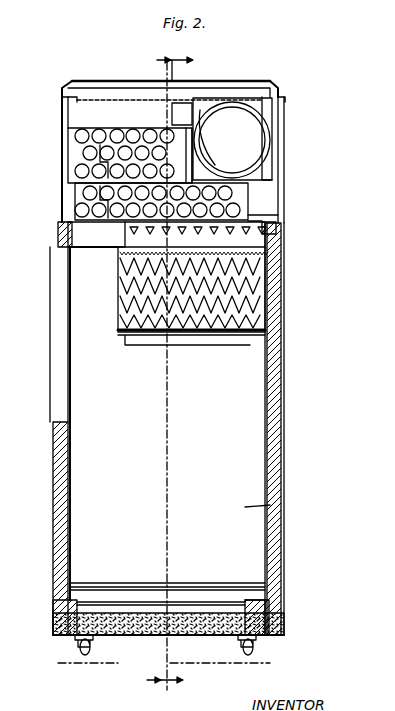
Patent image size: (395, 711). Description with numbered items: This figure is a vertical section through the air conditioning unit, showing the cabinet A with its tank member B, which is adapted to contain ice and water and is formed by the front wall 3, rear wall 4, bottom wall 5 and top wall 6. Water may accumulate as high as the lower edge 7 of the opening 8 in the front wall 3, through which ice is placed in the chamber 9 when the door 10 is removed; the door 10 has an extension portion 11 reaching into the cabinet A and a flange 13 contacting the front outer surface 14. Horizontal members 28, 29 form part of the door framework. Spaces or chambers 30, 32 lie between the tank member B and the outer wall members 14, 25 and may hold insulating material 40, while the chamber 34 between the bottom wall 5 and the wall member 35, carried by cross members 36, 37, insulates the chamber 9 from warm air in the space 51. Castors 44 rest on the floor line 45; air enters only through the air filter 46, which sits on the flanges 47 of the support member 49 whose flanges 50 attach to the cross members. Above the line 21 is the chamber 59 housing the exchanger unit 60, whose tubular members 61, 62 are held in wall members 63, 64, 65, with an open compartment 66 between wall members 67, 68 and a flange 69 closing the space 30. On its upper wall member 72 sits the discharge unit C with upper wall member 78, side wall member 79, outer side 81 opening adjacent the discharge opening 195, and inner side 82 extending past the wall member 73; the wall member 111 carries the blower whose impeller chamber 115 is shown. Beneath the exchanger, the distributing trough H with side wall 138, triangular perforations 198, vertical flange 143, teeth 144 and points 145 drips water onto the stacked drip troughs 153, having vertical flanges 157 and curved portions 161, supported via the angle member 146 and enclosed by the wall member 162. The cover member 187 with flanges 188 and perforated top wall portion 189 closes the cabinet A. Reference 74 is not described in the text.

The top wall portion 189 is at (214, 80).
The cover member 187 is at (277, 86).
The flanges 188 is at (285, 95).
The discharge opening 195 is at (62, 97).
The discharge unit C is at (77, 102).
The vertical side wall member 79 is at (77, 117).
The side panel 74 is at (62, 108).
The outer side 81 is at (85, 96).
The distributing trough H is at (270, 118).
The wall member 73 is at (195, 126).
The impeller chamber 115 is at (272, 136).
The wall member 111 is at (222, 165).
The inner side 82 is at (112, 120).
The wall member 64 is at (102, 128).
The exchanger unit 60 is at (108, 128).
The upper wall member 78 is at (128, 128).
The upper wall member 72 is at (160, 128).
The tubular members 61 is at (82, 166).
The wall member 67 is at (76, 176).
The wall member 63 is at (80, 182).
The wall member 65 is at (88, 194).
The compartment 66 is at (90, 210).
The line 21 is at (78, 206).
The tubular members 62 is at (265, 196).
The chamber 59 is at (250, 214).
The wall member 68 is at (262, 222).
The flange 69 is at (276, 228).
The side wall 138 is at (130, 242).
The triangular perforations 198 is at (176, 236).
The points 145 is at (138, 258).
The triangular serrations or teeth 144 is at (262, 250).
The cabinet A is at (270, 292).
The vertical flange 143 is at (272, 262).
The vertical flanges 157 is at (252, 276).
The drip troughs 153 is at (255, 302).
The curved portions 161 is at (135, 270).
The wall member 162 is at (118, 326).
The angle member 146 is at (186, 340).
The top wall 6 is at (100, 248).
The front wall 3 is at (30, 508).
The flange 13 is at (58, 228).
The horizontal member 28 is at (62, 248).
The door 10 is at (50, 357).
The opening 8 is at (70, 390).
The extension portion 11 is at (64, 430).
The lower edge 7 is at (68, 440).
The outer wall member 14 is at (53, 553).
The horizontal member 29 is at (55, 457).
The chamber 32 is at (58, 479).
The insulating material 40 is at (55, 575).
The cross member 37 is at (55, 614).
The chamber 30 is at (272, 358).
The tank member B is at (270, 388).
The rear wall 4 is at (270, 452).
The chamber 9 is at (245, 507).
The outer wall member 25 is at (281, 550).
The bottom wall 5 is at (130, 583).
The flanges 50 is at (202, 583).
The wall member 35 is at (265, 596).
The cross member 36 is at (270, 612).
The chamber 51 is at (270, 627).
The castors 44 is at (94, 660).
The floor line 45 is at (62, 663).
The air filter 46 is at (134, 635).
The flanges 47 is at (188, 640).
The chamber 34 is at (198, 640).
The support member 49 is at (250, 640).